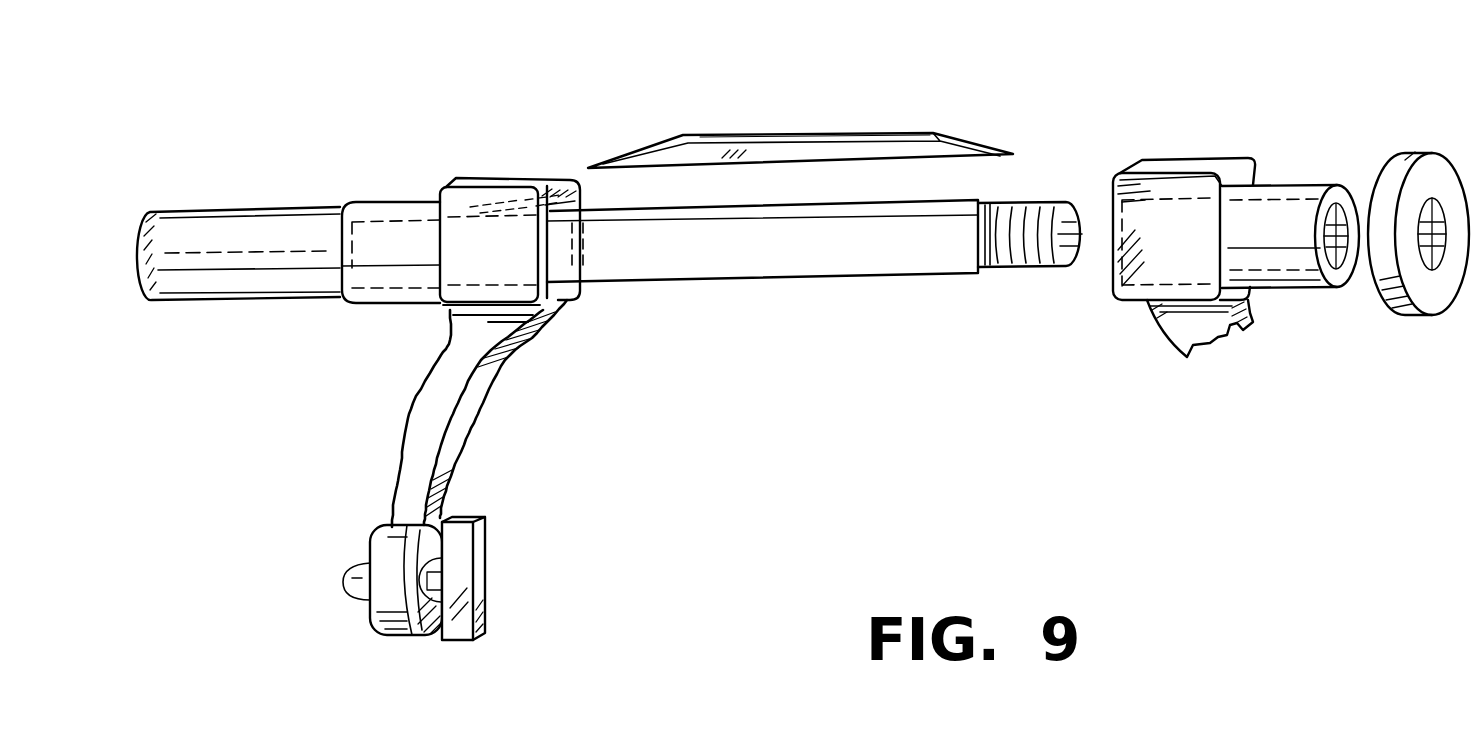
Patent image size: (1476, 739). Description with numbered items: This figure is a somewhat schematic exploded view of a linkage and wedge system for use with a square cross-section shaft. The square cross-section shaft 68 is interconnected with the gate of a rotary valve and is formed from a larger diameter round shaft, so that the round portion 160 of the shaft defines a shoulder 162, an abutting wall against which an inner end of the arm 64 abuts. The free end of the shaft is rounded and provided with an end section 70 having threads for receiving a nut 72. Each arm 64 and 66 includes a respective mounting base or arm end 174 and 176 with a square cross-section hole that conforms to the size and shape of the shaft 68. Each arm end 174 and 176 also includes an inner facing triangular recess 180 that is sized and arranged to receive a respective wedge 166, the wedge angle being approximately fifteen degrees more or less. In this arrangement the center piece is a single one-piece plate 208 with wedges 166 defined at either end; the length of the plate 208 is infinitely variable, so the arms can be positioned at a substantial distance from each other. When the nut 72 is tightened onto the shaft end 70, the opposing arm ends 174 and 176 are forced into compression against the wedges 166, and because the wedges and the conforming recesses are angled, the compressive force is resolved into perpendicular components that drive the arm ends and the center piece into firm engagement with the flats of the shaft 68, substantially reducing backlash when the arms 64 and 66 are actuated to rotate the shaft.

The arm 64 is at (432, 403).
The arm 66 is at (1175, 320).
The square cross-section shaft 68 is at (800, 256).
The end section 70 is at (1022, 250).
The nut 72 is at (1437, 294).
The round portion 160 is at (236, 312).
The shoulder 162 is at (424, 186).
The wedges 166 is at (632, 152).
The arm end 174 is at (490, 186).
The arm end 176 is at (1166, 164).
The triangular recess 180 is at (580, 198).
The one-piece plate 208 is at (780, 128).